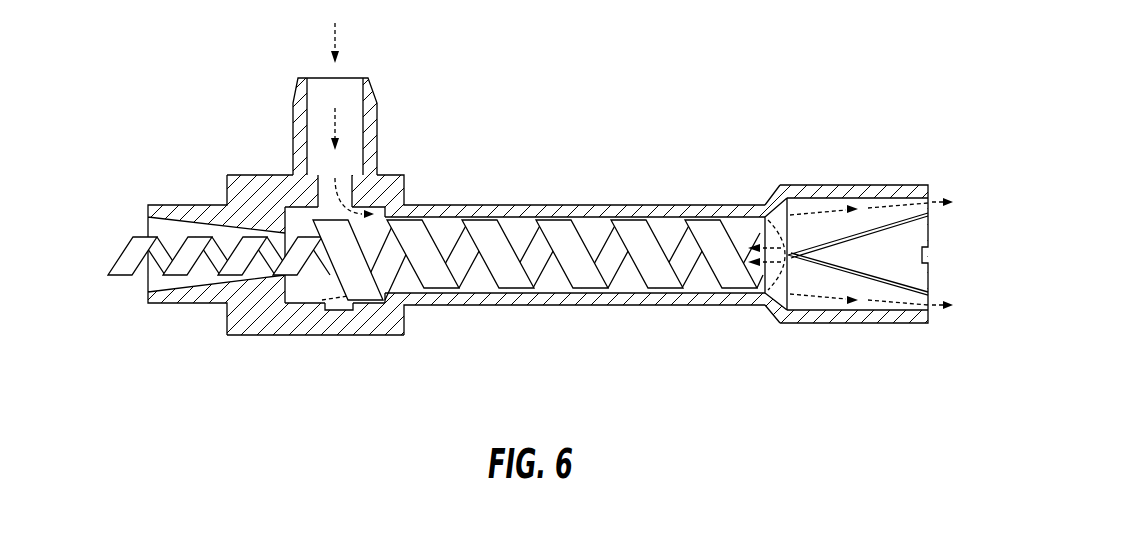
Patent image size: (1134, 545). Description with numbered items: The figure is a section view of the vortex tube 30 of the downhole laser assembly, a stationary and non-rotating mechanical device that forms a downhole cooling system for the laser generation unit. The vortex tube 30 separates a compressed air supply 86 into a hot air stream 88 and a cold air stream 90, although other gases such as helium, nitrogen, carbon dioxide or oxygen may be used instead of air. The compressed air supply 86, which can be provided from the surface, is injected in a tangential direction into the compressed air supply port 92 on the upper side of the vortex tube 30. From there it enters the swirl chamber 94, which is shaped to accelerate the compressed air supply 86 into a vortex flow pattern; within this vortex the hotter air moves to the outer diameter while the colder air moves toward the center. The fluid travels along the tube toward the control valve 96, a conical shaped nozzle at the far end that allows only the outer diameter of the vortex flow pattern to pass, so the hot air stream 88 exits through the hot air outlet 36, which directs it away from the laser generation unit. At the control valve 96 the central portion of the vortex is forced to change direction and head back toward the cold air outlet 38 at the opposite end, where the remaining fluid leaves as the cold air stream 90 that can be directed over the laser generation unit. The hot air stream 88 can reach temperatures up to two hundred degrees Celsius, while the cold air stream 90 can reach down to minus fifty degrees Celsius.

The vortex tube 30 is at (525, 193).
The hot air outlet 36 is at (882, 303).
The cold air outlet 38 is at (153, 285).
The compressed air supply 86 is at (335, 45).
The hot air stream 88 is at (800, 296).
The cold air stream 90 is at (133, 253).
The compressed air supply port 92 is at (378, 137).
The swirl chamber 94 is at (308, 268).
The control valve 96 is at (877, 248).